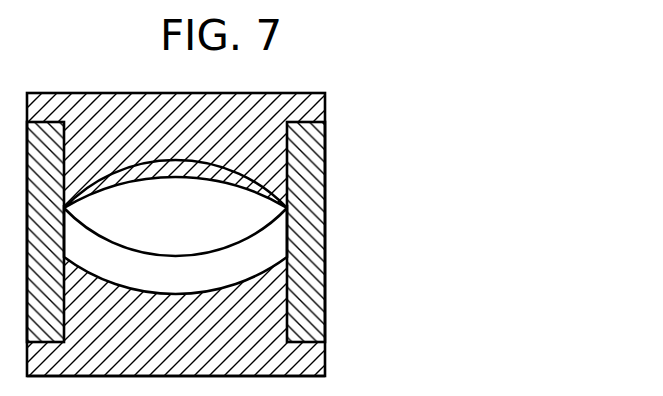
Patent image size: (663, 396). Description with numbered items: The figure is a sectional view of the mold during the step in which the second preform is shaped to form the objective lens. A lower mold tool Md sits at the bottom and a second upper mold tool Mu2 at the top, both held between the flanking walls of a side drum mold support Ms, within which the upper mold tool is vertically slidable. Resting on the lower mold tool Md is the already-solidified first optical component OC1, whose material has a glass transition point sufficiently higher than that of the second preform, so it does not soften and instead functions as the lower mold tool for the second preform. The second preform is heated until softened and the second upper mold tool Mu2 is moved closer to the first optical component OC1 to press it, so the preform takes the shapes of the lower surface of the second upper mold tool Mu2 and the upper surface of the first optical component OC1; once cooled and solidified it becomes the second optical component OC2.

The second upper mold tool Mu2 is at (326, 113).
The lower mold tool Md is at (327, 358).
The drum mold support Ms is at (327, 268).
The second optical component OC2 is at (233, 207).
The first optical component OC1 is at (256, 260).